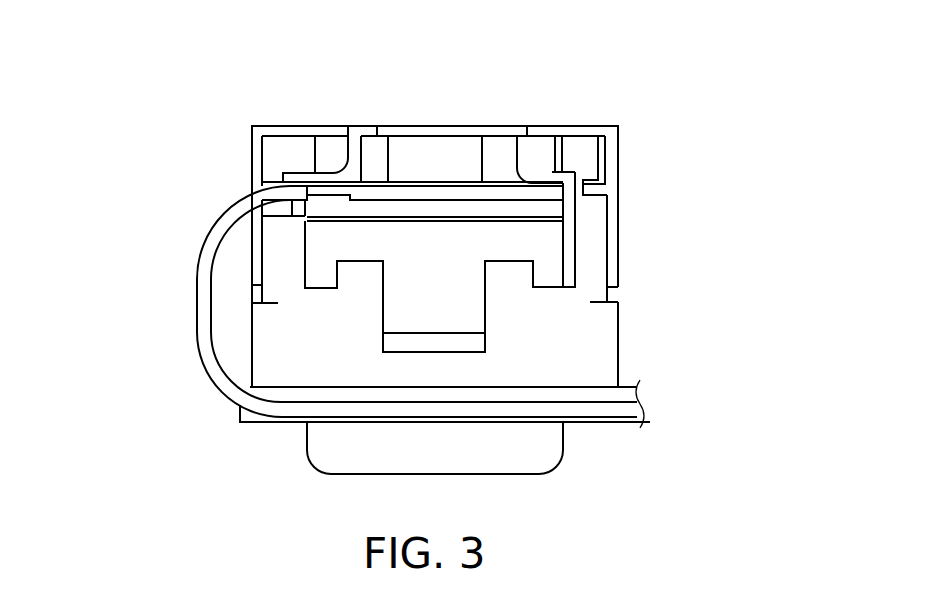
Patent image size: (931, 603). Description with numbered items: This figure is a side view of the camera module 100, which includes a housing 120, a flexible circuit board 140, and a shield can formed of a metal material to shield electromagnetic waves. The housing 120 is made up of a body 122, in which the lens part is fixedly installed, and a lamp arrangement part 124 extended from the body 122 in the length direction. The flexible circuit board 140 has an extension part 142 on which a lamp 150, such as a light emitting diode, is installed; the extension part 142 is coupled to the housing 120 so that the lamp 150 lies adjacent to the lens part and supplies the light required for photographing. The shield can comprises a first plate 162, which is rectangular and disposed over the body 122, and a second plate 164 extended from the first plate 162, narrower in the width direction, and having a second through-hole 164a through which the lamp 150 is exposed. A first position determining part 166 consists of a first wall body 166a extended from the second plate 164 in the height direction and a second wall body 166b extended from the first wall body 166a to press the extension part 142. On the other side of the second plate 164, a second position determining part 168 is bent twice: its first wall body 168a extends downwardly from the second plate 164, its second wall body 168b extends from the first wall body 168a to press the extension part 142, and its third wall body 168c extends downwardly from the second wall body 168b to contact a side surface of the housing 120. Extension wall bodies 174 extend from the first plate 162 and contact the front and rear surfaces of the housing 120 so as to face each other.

The camera module 100 is at (455, 36).
The housing 120 is at (510, 311).
The body 122 is at (593, 257).
The lamp arrangement part 124 is at (445, 310).
The flexible circuit board 140 is at (349, 307).
The extension part 142 is at (205, 340).
The lamp 150 is at (422, 153).
The first plate 162 is at (542, 132).
The second plate 164 is at (507, 128).
The second through-hole 164a is at (352, 150).
The first position determining part 166 is at (292, 48).
The first wall body 166a is at (298, 178).
The second wall body 166b is at (317, 137).
The second position determining part 168 is at (728, 107).
The first wall body 168a is at (527, 145).
The second wall body 168b is at (550, 172).
The third wall body 168c is at (570, 207).
The extension wall bodies 174 is at (257, 248).